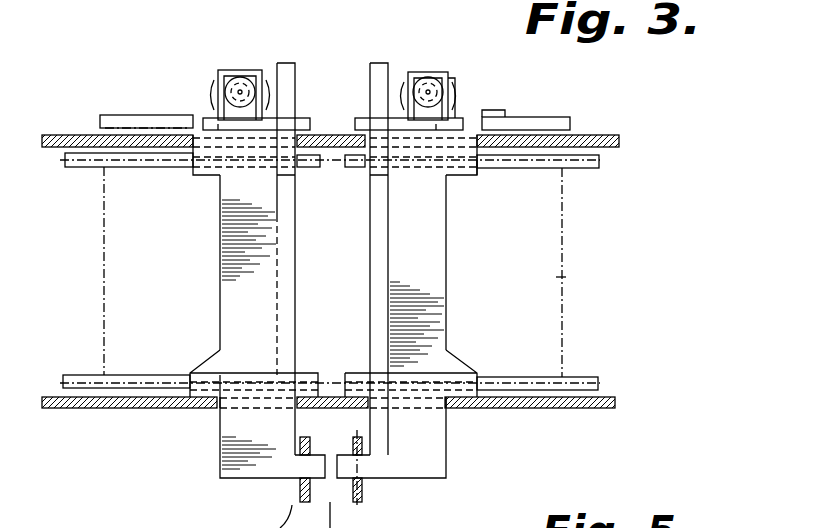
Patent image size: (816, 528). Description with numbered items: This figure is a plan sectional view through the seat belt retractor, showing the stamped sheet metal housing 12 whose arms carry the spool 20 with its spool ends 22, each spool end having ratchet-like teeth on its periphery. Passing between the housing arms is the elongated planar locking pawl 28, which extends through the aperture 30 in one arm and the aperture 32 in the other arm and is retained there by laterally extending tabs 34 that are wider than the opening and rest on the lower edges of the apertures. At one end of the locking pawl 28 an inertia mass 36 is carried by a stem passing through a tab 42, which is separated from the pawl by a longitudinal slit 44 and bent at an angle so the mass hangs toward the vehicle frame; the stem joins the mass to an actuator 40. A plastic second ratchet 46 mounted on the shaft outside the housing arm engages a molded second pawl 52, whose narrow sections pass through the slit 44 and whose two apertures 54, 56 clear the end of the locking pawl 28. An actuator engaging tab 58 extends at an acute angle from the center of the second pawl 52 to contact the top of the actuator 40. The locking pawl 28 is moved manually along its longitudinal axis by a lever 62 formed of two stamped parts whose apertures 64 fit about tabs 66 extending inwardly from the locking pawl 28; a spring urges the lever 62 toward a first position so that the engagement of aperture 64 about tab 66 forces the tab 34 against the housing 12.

The housing 12 is at (58, 134).
The spool 20 is at (562, 277).
The spool ends 22 is at (82, 170).
The locking pawl 28 is at (242, 270).
The aperture 30 is at (222, 410).
The aperture 32 is at (478, 168).
The tabs 34 is at (208, 173).
The inertia mass 36 is at (213, 100).
The actuator 40 is at (451, 85).
The tab 42 is at (220, 72).
The longitudinal slit 44 is at (268, 80).
The second ratchet 46 is at (107, 117).
The second pawl 52 is at (312, 124).
The aperture 54 is at (384, 165).
The aperture 56 is at (220, 124).
The actuator engaging tab 58 is at (438, 131).
The lever 62 is at (364, 497).
The apertures 64 is at (302, 472).
The tabs 66 is at (360, 466).